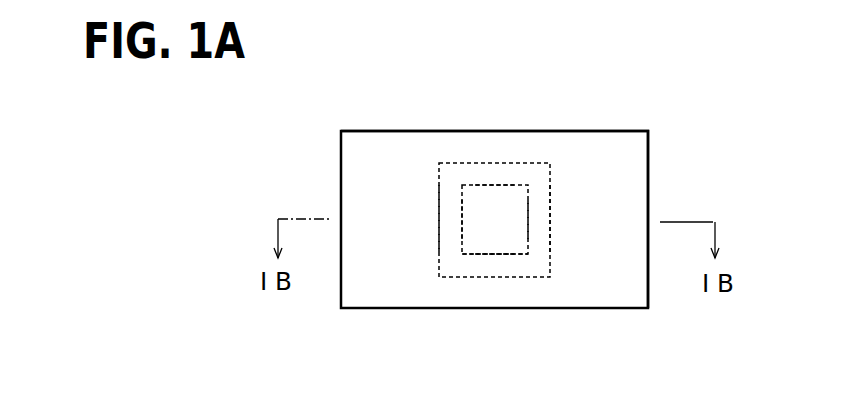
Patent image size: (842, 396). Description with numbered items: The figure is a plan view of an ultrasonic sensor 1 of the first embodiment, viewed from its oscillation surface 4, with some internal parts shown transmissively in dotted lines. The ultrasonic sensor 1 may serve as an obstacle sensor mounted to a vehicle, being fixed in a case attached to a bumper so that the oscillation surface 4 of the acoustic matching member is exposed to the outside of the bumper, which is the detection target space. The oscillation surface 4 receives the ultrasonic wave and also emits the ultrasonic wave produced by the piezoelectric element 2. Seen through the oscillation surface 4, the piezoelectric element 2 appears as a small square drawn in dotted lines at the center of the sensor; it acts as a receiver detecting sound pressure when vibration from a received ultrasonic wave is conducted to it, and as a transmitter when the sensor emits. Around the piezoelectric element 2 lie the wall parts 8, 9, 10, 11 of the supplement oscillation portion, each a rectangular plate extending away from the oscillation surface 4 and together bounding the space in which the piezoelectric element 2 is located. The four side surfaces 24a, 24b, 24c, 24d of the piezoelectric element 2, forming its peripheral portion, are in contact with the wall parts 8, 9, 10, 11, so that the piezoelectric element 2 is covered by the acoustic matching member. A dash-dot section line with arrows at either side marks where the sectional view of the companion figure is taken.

The ultrasonic sensor 1 is at (640, 112).
The piezoelectric element 2 is at (480, 238).
The oscillation surface 4 is at (633, 148).
The wall part 8 is at (448, 195).
The wall part 9 is at (538, 206).
The wall part 10 is at (502, 268).
The wall part 11 is at (505, 175).
The side surface 24a is at (462, 222).
The side surface 24b is at (528, 232).
The side surface 24c is at (517, 254).
The side surface 24d is at (483, 185).